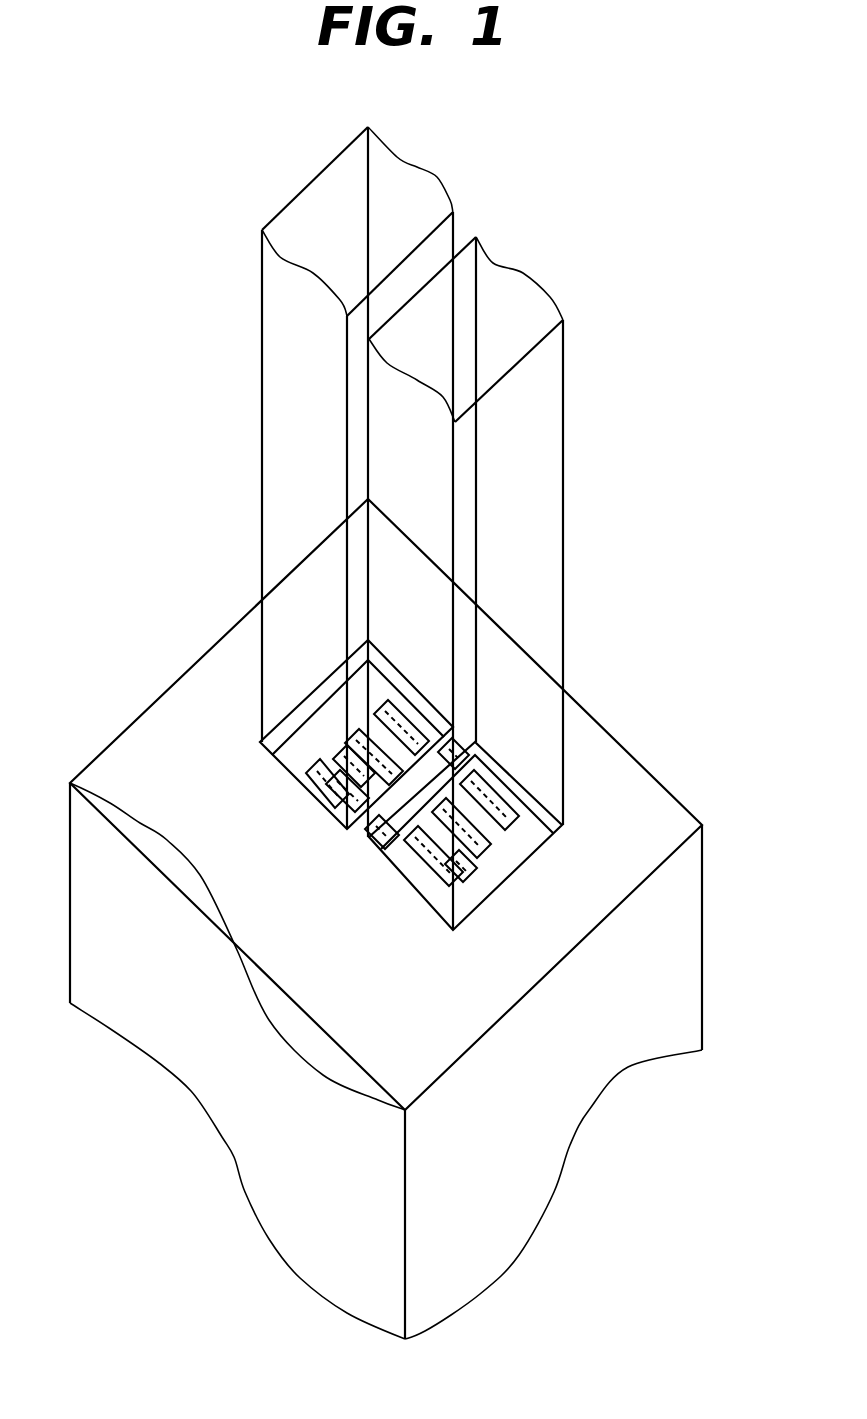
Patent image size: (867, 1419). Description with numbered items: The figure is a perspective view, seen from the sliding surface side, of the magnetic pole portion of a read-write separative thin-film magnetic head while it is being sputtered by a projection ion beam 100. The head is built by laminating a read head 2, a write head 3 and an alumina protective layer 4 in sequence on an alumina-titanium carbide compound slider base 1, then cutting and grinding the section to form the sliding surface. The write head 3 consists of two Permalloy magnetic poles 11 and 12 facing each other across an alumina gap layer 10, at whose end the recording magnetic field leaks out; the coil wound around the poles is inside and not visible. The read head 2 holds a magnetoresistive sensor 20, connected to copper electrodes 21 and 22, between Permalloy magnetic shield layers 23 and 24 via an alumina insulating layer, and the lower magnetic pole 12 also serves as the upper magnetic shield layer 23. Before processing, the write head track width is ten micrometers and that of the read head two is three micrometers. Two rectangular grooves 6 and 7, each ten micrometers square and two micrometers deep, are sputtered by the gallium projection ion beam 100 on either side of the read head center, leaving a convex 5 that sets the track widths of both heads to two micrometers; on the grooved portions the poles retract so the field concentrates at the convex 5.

The projection ion beam 100 is at (490, 295).
The slider base 1 is at (407, 887).
The read head 2 is at (487, 863).
The write head 3 is at (525, 837).
The alumina protective layer 4 is at (502, 797).
The convex 5 is at (458, 735).
The rectangular groove 6 is at (543, 840).
The rectangular groove 7 is at (337, 705).
The gap layer 10 is at (377, 730).
The magnetic pole 11 is at (395, 720).
The lower magnetic pole 12 is at (360, 738).
The magnetoresistive sensor 20 is at (367, 827).
The copper electrode 21 is at (327, 757).
The copper electrode 22 is at (460, 865).
The upper magnetic shield layer 23 is at (350, 730).
The magnetic shield layer 24 is at (320, 787).